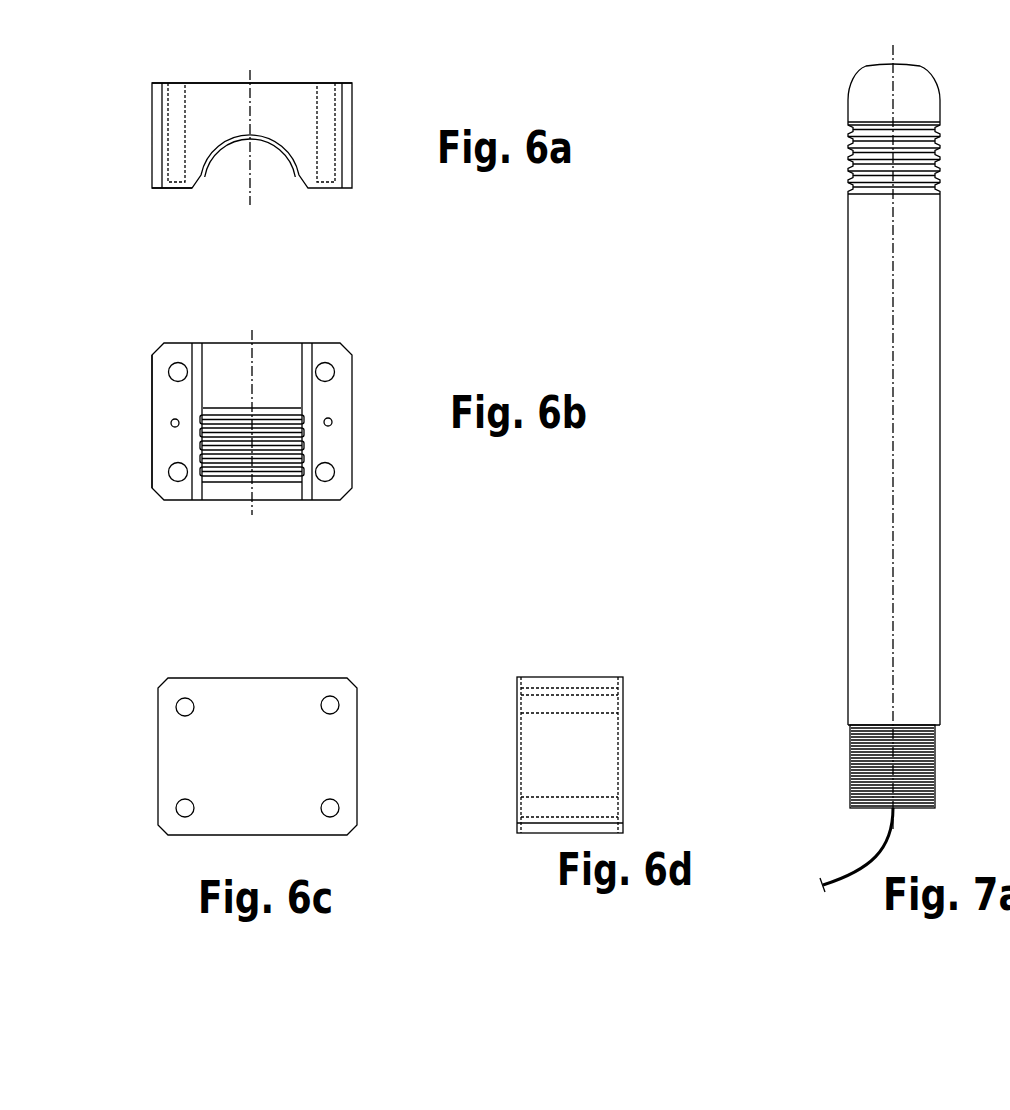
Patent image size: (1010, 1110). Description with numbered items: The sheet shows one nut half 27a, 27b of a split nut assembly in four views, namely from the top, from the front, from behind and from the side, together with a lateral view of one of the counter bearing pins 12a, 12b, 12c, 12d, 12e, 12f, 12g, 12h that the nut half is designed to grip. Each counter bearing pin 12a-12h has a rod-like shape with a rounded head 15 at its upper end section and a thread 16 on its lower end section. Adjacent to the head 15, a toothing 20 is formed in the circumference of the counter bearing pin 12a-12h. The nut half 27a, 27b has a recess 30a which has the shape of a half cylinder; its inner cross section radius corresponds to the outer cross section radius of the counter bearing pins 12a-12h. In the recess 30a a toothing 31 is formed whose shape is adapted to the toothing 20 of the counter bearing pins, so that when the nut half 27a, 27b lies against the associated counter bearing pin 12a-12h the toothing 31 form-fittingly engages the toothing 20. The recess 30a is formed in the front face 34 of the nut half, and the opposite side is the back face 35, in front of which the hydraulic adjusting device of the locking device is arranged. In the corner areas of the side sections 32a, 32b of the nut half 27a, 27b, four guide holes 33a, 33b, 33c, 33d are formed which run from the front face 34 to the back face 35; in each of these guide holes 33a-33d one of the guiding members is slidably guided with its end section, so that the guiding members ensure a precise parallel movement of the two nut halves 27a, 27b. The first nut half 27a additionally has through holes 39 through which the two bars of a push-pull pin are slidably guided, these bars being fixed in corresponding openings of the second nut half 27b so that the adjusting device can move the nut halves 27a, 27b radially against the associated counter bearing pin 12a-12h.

In FIG. 7A, the counter bearing pin 12a is at (846, 468).
In FIG. 7A, the counter bearing pin 12b is at (873, 468).
In FIG. 7A, the counter bearing pin 12c is at (873, 468).
In FIG. 7A, the counter bearing pin 12d is at (873, 468).
In FIG. 7A, the counter bearing pin 12e is at (873, 468).
In FIG. 7A, the counter bearing pin 12f is at (873, 468).
In FIG. 7A, the counter bearing pin 12g is at (873, 468).
In FIG. 7A, the counter bearing pin 12h is at (873, 468).
In FIG. 7A, the rounded head 15 is at (868, 93).
In FIG. 7A, the thread 16 is at (852, 768).
In FIG. 7A, the toothing 20 is at (915, 152).
In FIG. 6A, the nut half 27a is at (253, 137).
In FIG. 6B, the nut half 27a is at (267, 406).
In FIG. 6C, the nut half 27a is at (258, 703).
In FIG. 6D, the nut half 27a is at (559, 708).
In FIG. 6A, the nut half 27b is at (249, 137).
In FIG. 6B, the nut half 27b is at (253, 406).
In FIG. 6C, the nut half 27b is at (258, 730).
In FIG. 6D, the nut half 27b is at (559, 750).
In FIG. 6A, the recess 30a is at (270, 178).
In FIG. 6B, the recess 30a is at (232, 378).
In FIG. 6B, the toothing 31 is at (272, 450).
In FIG. 6A, the side section 32a is at (177, 160).
In FIG. 6A, the side section 32b is at (340, 165).
In FIG. 6B, the guide hole 33a is at (322, 368).
In FIG. 6C, the guide hole 33a is at (328, 700).
In FIG. 6B, the guide hole 33b is at (172, 370).
In FIG. 6C, the guide hole 33b is at (185, 707).
In FIG. 6B, the guide hole 33c is at (178, 483).
In FIG. 6C, the guide hole 33c is at (185, 808).
In FIG. 6B, the guide hole 33d is at (325, 474).
In FIG. 6C, the guide hole 33d is at (330, 805).
In FIG. 6A, the front face 34 is at (176, 192).
In FIG. 6B, the front face 34 is at (168, 407).
In FIG. 6D, the front face 34 is at (624, 720).
In FIG. 6A, the back face 35 is at (210, 74).
In FIG. 6C, the back face 35 is at (257, 683).
In FIG. 6D, the back face 35 is at (508, 758).
In FIG. 6B, the through hole 39 is at (331, 426).